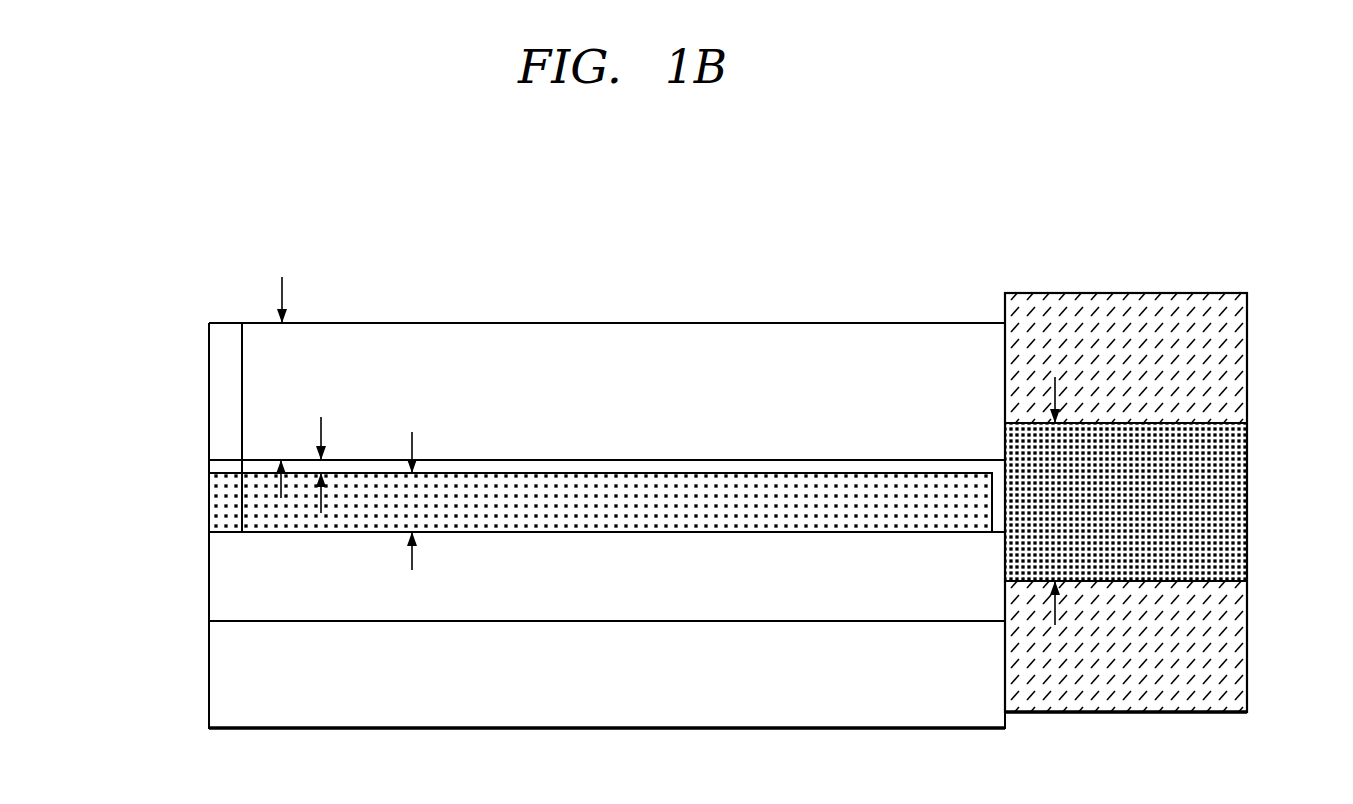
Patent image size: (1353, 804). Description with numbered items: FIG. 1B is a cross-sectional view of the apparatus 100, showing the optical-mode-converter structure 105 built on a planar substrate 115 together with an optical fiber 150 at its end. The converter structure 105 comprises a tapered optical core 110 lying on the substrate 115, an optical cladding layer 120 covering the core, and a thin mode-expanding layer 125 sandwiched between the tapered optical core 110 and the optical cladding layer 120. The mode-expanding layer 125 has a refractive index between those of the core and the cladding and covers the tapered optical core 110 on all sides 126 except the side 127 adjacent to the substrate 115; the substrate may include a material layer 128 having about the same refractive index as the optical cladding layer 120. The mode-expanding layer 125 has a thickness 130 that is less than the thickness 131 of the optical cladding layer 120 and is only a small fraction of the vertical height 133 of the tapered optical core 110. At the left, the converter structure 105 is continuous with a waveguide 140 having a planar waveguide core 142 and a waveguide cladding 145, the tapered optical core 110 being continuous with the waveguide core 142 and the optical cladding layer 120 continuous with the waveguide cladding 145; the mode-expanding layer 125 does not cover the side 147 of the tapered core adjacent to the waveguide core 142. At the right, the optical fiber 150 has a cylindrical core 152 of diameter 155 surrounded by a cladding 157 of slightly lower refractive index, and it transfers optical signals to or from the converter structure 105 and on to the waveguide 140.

The apparatus 100 is at (1255, 198).
The optical-mode-converter structure 105 is at (240, 260).
The tapered optical core 110 is at (657, 482).
The planar substrate 115 is at (218, 672).
The optical cladding layer 120 is at (608, 323).
The mode-expanding layer 125 is at (218, 465).
The sides of tapered optical core 126 is at (851, 448).
The side adjacent to substrate 127 is at (624, 543).
The material layer 128 is at (218, 567).
The thickness of mode-expanding layer 130 is at (323, 433).
The thickness of optical cladding layer 131 is at (282, 293).
The vertical height of tapered optical core 133 is at (412, 555).
The waveguide 140 is at (187, 295).
The waveguide core 142 is at (218, 517).
The waveguide cladding 145 is at (218, 362).
The side adjacent to waveguide core 147 is at (237, 492).
The optical fiber 150 is at (1055, 270).
The cylindrical core 152 is at (1247, 500).
The diameter 155 is at (1057, 610).
The cladding 157 is at (1247, 322).